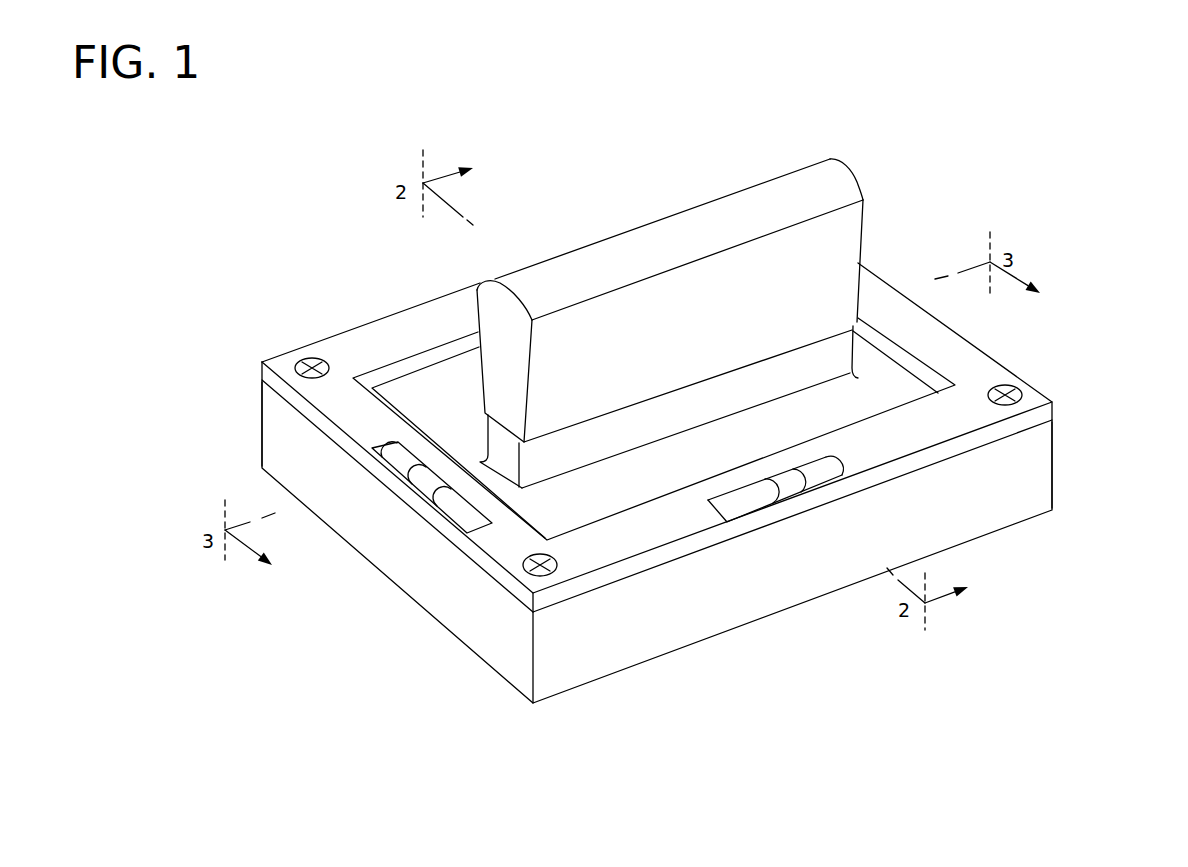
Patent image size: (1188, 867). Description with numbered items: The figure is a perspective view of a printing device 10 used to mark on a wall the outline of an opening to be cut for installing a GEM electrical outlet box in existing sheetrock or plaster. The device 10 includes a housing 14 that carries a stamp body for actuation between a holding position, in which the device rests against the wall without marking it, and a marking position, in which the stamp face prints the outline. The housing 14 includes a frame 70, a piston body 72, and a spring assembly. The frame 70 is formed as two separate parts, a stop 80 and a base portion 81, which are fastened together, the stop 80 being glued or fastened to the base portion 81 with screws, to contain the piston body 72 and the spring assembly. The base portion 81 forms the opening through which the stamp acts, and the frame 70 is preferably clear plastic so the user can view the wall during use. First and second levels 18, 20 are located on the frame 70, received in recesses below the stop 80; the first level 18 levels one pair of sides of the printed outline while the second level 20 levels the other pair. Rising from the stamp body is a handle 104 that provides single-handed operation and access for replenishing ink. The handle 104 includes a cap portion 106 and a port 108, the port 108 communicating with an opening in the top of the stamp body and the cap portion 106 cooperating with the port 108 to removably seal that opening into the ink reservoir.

The printing device 10 is at (1002, 667).
The housing 14 is at (978, 507).
The first level 18 is at (402, 463).
The second level 20 is at (744, 499).
The frame 70 is at (273, 440).
The piston body 72 is at (412, 395).
The stop 80 is at (1043, 413).
The base portion 81 is at (1043, 476).
The handle 104 is at (868, 227).
The cap portion 106 is at (478, 322).
The port 108 is at (853, 352).